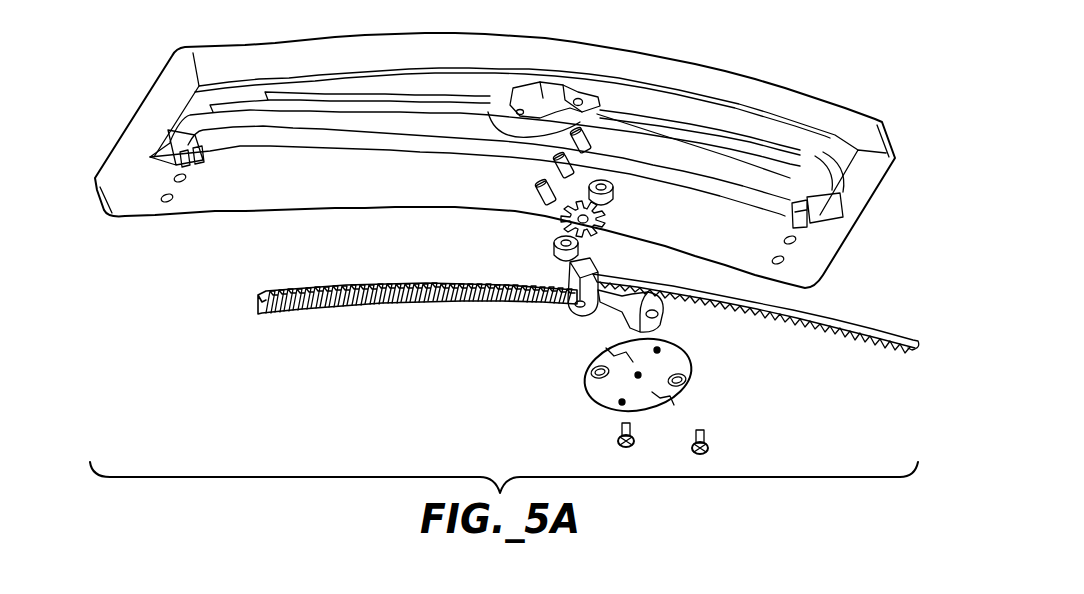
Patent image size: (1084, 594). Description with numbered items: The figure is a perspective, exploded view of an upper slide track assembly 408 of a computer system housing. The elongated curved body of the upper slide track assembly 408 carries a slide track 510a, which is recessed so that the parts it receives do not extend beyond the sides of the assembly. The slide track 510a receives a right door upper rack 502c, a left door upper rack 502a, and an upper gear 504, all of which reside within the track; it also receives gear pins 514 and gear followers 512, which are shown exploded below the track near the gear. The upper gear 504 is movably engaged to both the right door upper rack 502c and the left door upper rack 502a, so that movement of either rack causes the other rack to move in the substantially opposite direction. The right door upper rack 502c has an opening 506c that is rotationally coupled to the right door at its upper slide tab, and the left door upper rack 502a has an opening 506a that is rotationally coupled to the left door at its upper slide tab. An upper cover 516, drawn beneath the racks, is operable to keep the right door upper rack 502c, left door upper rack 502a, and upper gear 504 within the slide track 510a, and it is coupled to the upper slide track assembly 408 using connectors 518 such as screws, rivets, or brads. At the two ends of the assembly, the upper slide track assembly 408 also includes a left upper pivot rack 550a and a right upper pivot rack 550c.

The upper slide track assembly 408 is at (823, 107).
The slide track 510a is at (285, 110).
The left upper pivot rack 550a is at (172, 122).
The right upper pivot rack 550c is at (812, 213).
The gear pins 514 is at (545, 185).
The gear followers 512 is at (620, 193).
The upper gear 504 is at (590, 234).
The right door upper rack 502c is at (398, 312).
The left door upper rack 502a is at (838, 313).
The opening 506a is at (580, 307).
The opening 506c is at (663, 318).
The upper cover 516 is at (693, 360).
The connectors 518 is at (700, 432).